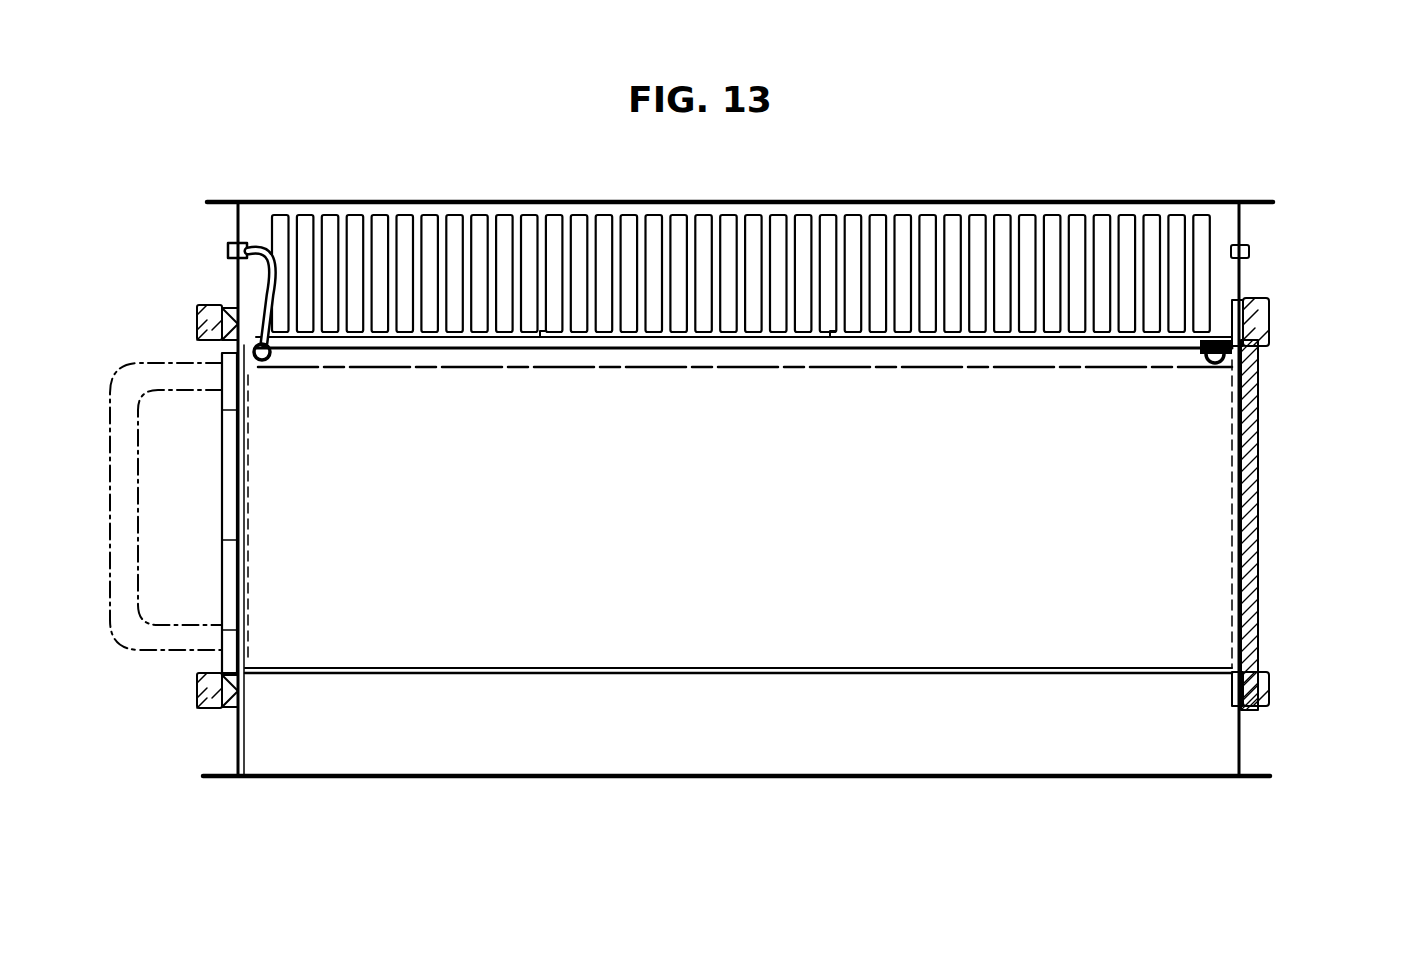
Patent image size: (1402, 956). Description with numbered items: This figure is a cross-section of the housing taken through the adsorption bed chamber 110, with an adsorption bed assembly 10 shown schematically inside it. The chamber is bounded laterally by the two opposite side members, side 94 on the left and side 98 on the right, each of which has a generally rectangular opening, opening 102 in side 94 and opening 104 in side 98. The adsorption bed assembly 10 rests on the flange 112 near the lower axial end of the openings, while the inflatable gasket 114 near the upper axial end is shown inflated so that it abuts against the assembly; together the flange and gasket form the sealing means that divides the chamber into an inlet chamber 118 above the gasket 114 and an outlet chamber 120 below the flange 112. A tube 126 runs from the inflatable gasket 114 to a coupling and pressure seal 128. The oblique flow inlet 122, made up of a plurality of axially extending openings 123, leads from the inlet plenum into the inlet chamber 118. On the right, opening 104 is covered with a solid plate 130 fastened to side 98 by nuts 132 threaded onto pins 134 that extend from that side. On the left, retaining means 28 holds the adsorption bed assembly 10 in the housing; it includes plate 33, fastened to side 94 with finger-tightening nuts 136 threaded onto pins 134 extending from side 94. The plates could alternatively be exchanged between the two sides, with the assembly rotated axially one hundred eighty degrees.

The adsorption bed assembly 10 is at (283, 434).
The retaining means 28 is at (145, 250).
The plate 33 is at (222, 488).
The side 94 is at (238, 748).
The side 98 is at (1242, 232).
The opening 102 is at (270, 571).
The opening 104 is at (1200, 583).
The adsorption bed chamber 110 is at (678, 635).
The flange 112 is at (1070, 672).
The inflatable gasket 114 is at (640, 352).
The inlet chamber 118 is at (1222, 225).
The outlet chamber 120 is at (930, 752).
The oblique flow inlet 122 is at (741, 239).
The axially extending openings 123 is at (507, 232).
The tube 126 is at (262, 250).
The coupling and pressure seal 128 is at (232, 250).
The solid plate 130 is at (1255, 493).
The nuts 132 is at (1268, 312).
The pins 134 is at (238, 325).
The finger-tightening nuts 136 is at (198, 330).